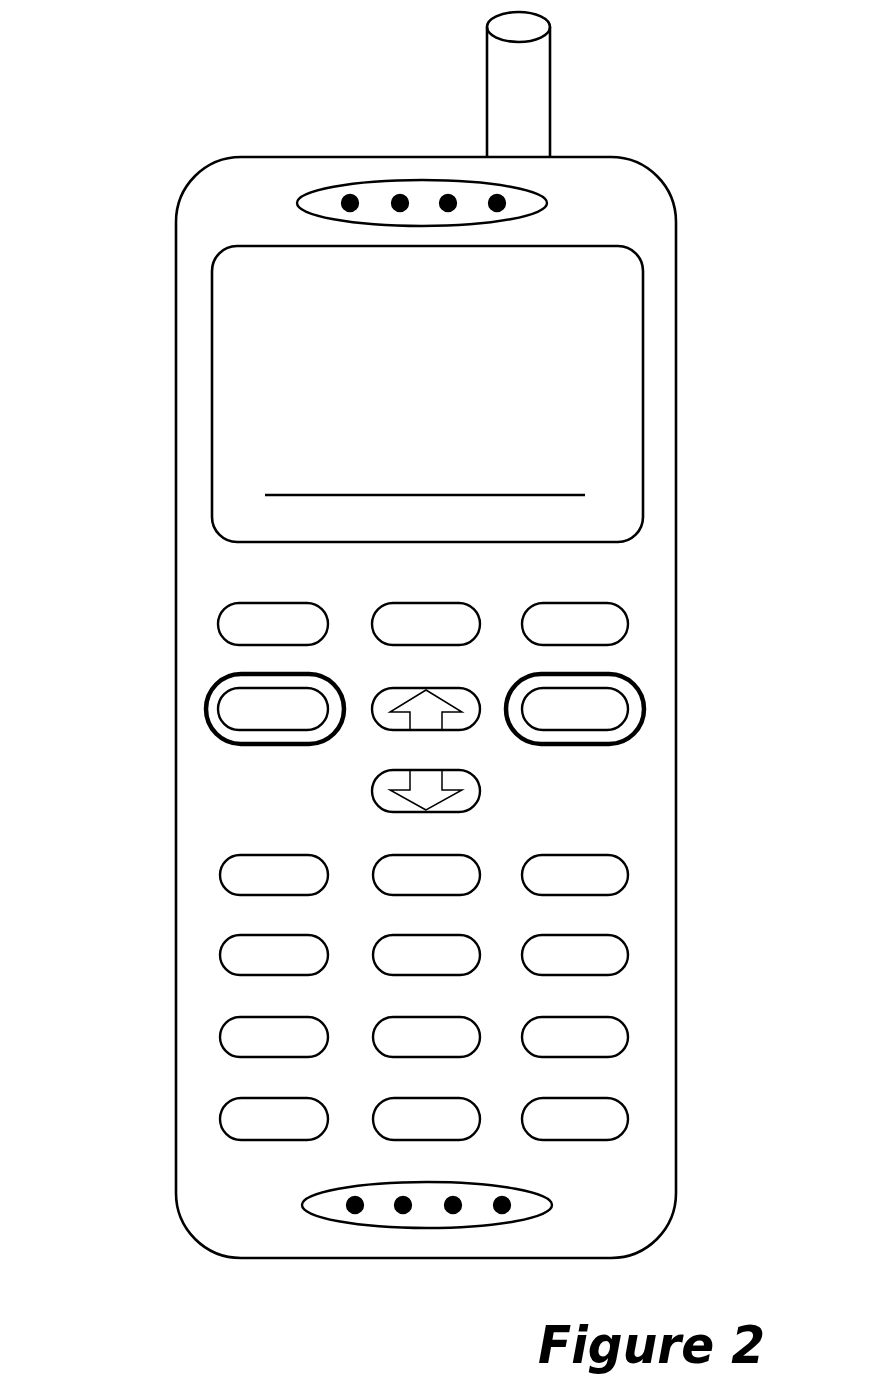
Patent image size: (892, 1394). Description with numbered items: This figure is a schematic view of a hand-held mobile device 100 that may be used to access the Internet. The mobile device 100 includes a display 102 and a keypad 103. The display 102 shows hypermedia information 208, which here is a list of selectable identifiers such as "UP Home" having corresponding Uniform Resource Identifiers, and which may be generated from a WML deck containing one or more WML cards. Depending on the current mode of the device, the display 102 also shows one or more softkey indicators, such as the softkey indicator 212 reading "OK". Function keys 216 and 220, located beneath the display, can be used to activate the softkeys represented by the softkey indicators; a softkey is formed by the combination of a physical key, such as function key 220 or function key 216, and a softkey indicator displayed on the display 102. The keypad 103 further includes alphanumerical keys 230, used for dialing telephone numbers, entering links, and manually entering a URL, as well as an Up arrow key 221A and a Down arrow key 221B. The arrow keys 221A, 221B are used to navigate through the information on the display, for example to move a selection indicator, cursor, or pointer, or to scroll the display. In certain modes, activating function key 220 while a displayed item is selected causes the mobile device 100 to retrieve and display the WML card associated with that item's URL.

The mobile device 100 is at (676, 262).
The display 102 is at (643, 383).
The keypad 103 is at (628, 564).
The hypermedia information 208 is at (488, 302).
The softkey indicator 212 is at (305, 521).
The function key 216 is at (645, 700).
The function key 220 is at (206, 703).
The Up arrow key 221A is at (402, 688).
The Down arrow key 221B is at (400, 812).
The alphanumerical keys 230 is at (650, 849).